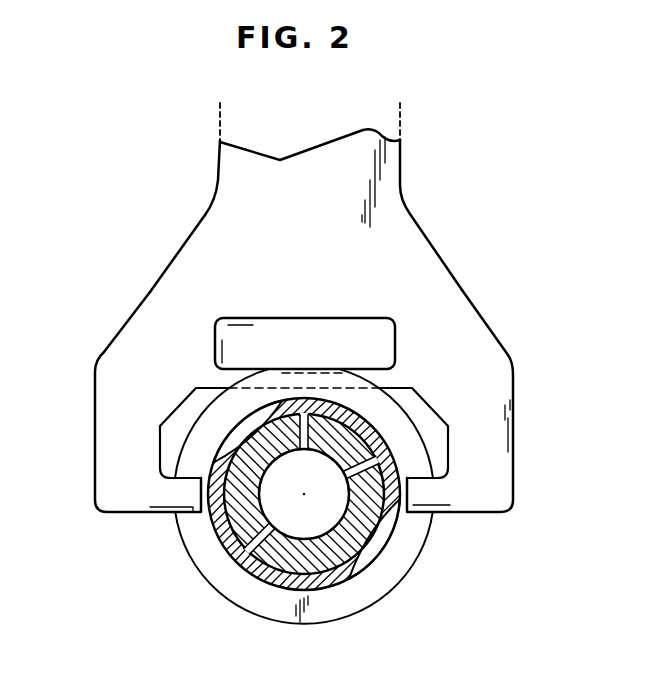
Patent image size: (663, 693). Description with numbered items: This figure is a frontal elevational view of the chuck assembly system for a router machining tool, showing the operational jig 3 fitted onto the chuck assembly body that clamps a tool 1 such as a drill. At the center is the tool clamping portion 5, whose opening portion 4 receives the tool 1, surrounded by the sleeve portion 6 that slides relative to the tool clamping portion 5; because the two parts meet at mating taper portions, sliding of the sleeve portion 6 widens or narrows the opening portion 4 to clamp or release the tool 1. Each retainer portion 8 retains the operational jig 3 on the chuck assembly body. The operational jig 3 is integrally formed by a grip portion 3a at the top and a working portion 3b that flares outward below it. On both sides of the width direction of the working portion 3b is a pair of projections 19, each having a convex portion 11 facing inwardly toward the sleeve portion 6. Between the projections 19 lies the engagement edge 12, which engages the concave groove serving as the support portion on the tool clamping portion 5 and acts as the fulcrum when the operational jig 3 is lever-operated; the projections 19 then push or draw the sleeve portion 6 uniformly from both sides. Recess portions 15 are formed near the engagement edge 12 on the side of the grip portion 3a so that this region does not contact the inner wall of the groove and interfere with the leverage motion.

The tool 1 is at (347, 475).
The operational jig 3 is at (398, 168).
The grip portion 3a is at (203, 152).
The working portion 3b is at (120, 315).
The opening portion 4 is at (242, 575).
The tool clamping portion 5 is at (353, 557).
The sleeve portion 6 is at (195, 570).
The retainer portion 8 is at (408, 515).
The convex portion 11 is at (192, 512).
The engagement edge 12 is at (383, 372).
The recess portion 15 is at (357, 323).
The projection 19 is at (100, 433).